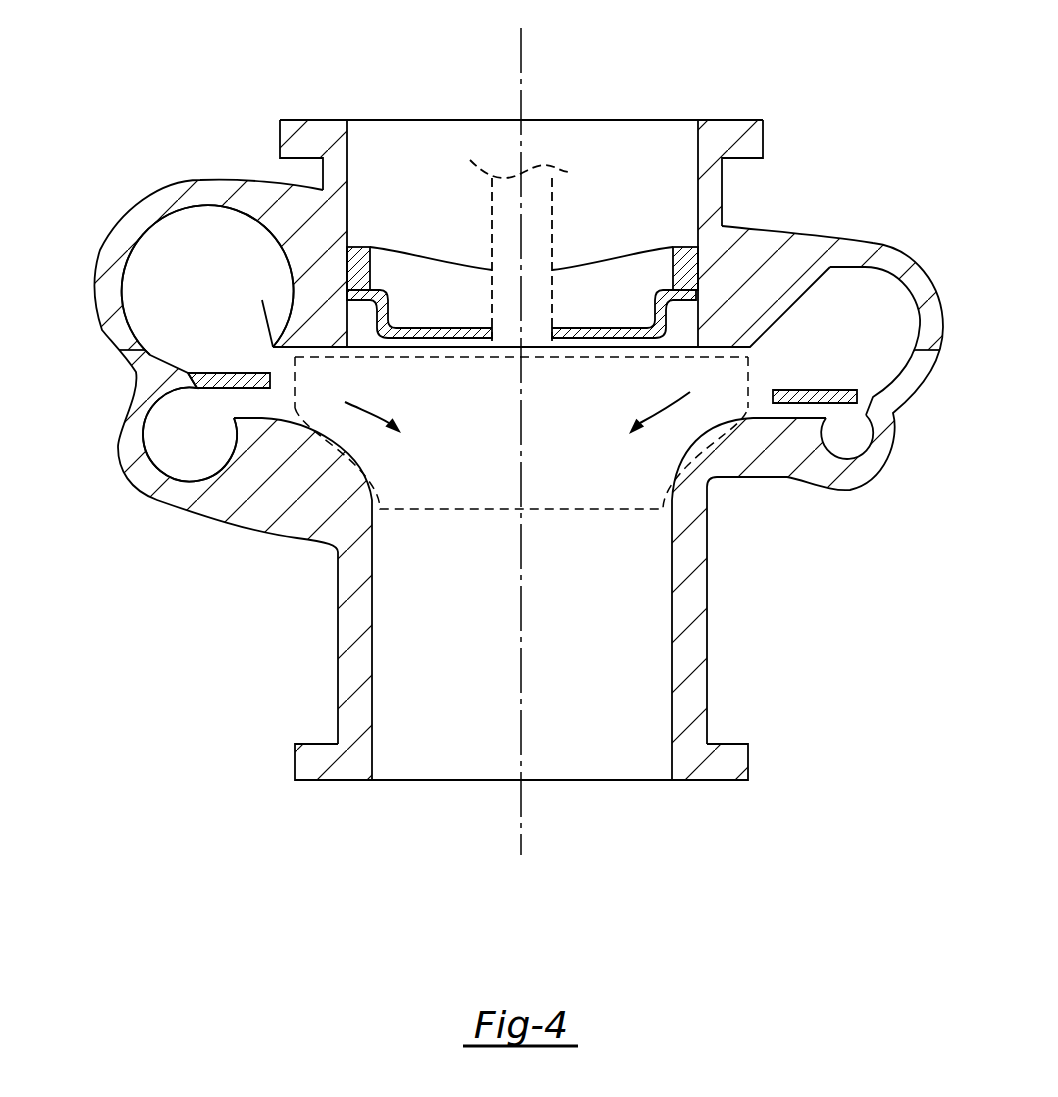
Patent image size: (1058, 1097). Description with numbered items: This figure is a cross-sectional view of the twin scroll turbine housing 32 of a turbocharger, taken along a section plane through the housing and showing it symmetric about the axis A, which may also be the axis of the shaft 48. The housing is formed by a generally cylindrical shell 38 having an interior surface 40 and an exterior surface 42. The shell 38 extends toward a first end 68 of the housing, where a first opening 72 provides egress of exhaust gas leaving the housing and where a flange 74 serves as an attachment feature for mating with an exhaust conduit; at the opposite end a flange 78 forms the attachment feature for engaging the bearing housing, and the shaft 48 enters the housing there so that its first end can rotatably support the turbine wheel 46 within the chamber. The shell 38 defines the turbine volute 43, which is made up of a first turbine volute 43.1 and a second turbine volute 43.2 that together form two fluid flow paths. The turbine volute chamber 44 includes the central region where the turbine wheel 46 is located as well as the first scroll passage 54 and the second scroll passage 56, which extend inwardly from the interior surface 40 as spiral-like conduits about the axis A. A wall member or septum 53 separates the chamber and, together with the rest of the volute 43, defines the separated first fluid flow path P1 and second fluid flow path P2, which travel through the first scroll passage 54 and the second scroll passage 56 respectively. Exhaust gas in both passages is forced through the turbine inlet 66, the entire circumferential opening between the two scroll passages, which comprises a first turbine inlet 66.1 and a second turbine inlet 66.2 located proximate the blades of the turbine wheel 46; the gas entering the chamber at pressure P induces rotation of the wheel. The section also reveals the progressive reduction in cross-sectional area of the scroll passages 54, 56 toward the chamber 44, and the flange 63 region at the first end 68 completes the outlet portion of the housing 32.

The turbine housing 32 is at (840, 112).
The flange 78 is at (303, 128).
The shaft 48 is at (548, 235).
The axis A is at (532, 80).
The turbine volute 43 is at (100, 378).
The first turbine volute 43.1 is at (137, 184).
The second turbine volute 43.2 is at (152, 515).
The first scroll passage 54 is at (191, 268).
The second scroll passage 56 is at (178, 477).
The septum 53 is at (227, 373).
The turbine inlet 66 is at (283, 378).
The first turbine inlet 66.1 is at (273, 347).
The second turbine inlet 66.2 is at (267, 393).
The turbine wheel 46 is at (683, 418).
The turbine volute chamber 44 is at (543, 400).
The interior surface 40 is at (370, 678).
The shell 38 is at (695, 650).
The exterior surface 42 is at (337, 713).
The flange 74 is at (327, 770).
The bottom flange portion 63 is at (640, 782).
The first opening 72 is at (547, 758).
The first end 68 is at (460, 808).
The pressure in chamber P is at (522, 401).
The first fluid flow path P1 is at (305, 375).
The second fluid flow path P2 is at (305, 395).